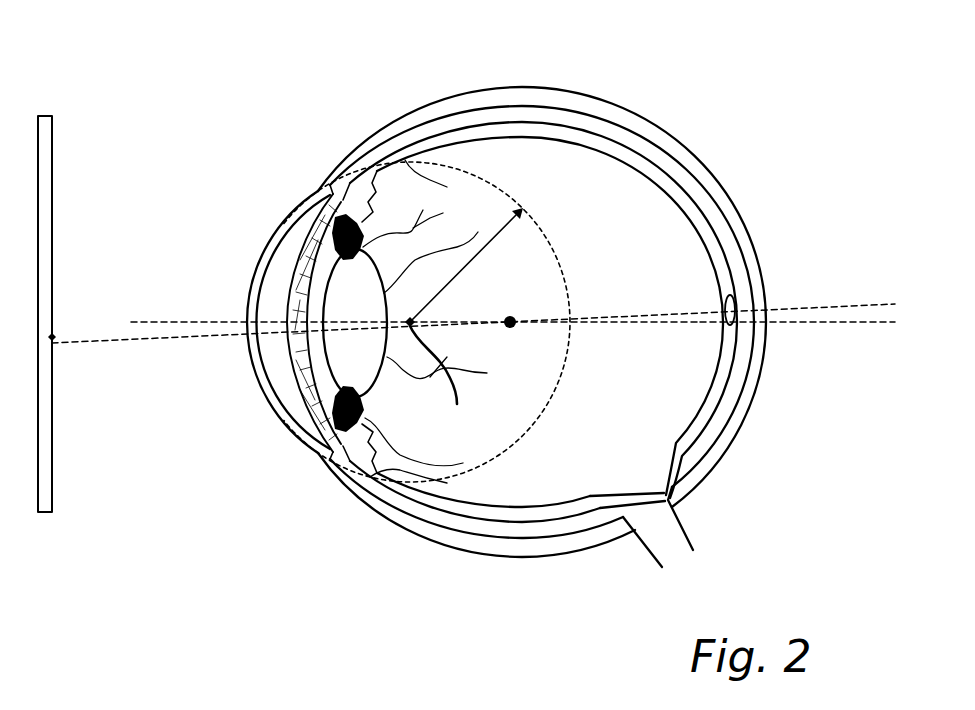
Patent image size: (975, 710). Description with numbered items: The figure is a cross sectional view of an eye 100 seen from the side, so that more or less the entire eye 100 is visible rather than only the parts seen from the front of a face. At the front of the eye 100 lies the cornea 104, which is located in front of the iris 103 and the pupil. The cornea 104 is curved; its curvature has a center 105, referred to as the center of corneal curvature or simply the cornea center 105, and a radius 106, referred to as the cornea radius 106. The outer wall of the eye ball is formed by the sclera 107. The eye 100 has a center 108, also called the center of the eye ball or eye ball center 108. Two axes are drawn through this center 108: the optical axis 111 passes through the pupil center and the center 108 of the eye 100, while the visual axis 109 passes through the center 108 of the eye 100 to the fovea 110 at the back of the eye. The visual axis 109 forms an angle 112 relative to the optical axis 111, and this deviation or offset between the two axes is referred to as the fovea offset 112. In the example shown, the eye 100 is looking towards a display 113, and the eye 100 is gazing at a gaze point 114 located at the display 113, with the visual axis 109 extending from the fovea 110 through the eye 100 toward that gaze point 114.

The eye 100 is at (203, 86).
The iris 103 is at (292, 272).
The cornea 104 is at (285, 422).
The center of corneal curvature 105 is at (425, 321).
The radius of curvature of the cornea 106 is at (465, 267).
The sclera 107 is at (583, 93).
The center of the eye 108 is at (512, 327).
The visual axis 109 is at (165, 332).
The fovea 110 is at (733, 300).
The optical axis 111 is at (153, 320).
The fovea offset 112 is at (798, 322).
The display 113 is at (52, 150).
The gaze point 114 is at (52, 337).